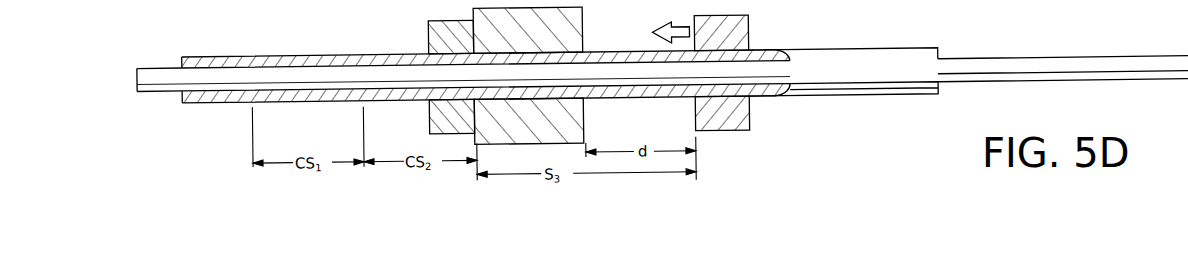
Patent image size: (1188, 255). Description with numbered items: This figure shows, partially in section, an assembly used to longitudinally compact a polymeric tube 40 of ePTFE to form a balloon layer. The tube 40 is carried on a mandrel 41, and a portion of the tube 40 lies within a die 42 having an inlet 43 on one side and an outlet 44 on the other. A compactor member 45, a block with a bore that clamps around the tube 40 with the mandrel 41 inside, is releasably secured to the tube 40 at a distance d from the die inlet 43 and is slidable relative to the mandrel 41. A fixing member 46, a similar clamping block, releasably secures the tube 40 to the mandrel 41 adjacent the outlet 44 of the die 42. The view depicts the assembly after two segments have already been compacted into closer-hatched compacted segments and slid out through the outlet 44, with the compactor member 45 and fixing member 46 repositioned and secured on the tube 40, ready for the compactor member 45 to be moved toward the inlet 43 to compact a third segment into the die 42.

The polymeric tube 40 is at (840, 57).
The mandrel 41 is at (965, 68).
The die 42 is at (528, 30).
The die inlet 43 is at (586, 105).
The die outlet 44 is at (450, 110).
The compactor member 45 is at (752, 40).
The fixing member 46 is at (428, 43).